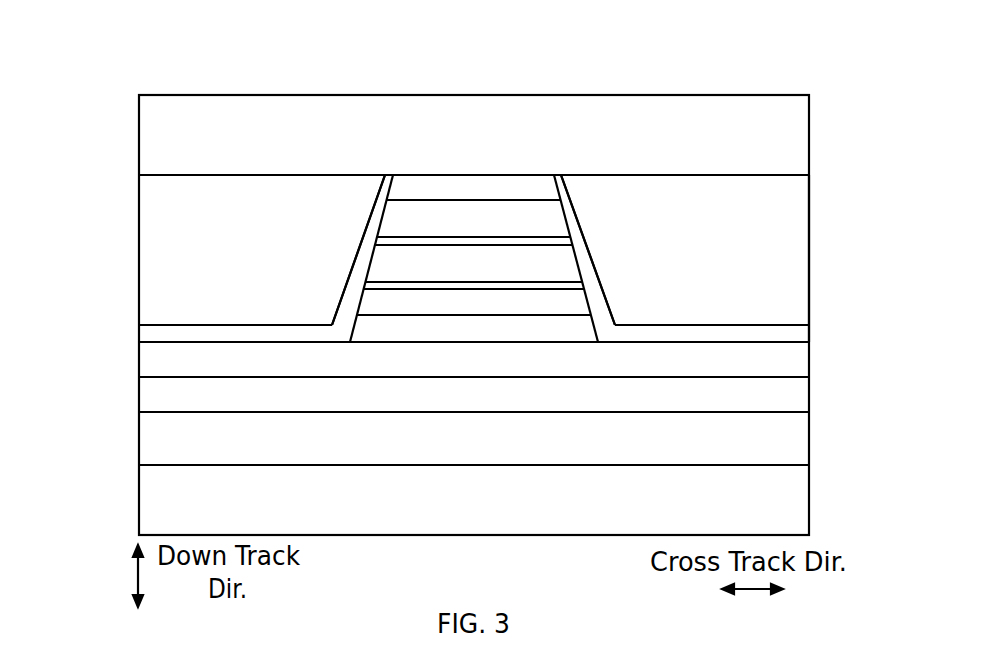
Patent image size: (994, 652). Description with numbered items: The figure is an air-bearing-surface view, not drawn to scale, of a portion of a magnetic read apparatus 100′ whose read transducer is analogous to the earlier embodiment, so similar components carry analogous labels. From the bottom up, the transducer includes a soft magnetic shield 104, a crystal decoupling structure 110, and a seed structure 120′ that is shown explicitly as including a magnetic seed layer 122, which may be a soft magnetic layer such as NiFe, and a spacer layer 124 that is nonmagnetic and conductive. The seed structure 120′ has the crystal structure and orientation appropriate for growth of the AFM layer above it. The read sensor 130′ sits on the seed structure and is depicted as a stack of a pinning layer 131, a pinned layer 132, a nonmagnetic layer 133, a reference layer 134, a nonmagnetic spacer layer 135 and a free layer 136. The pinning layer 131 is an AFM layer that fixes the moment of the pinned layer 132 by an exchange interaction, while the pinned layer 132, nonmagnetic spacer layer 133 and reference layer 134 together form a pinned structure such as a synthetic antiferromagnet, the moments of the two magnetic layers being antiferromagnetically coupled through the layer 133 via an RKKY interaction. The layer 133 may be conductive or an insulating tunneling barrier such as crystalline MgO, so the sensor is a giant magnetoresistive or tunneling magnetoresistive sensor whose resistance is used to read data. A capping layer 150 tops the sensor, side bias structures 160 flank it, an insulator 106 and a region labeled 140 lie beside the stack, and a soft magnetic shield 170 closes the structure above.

The magnetic read apparatus 100′ is at (530, 55).
The soft magnetic shield 104 is at (474, 502).
The insulator 106 is at (139, 325).
The crystal decoupling structure 110 is at (474, 444).
The seed structure 120′ is at (840, 382).
The magnetic seed layer 122 is at (474, 395).
The spacer layer 124 is at (474, 360).
The read sensor 130′ is at (303, 289).
The pinning layer 131 is at (474, 328).
The pinned layer 132 is at (474, 303).
The nonmagnetic spacer layer 133 is at (583, 285).
The reference layer 134 is at (473, 266).
The nonmagnetic spacer layer 135 is at (380, 237).
The free layer 136 is at (473, 220).
The insulating layer 140 is at (810, 249).
The capping layer 150 is at (474, 188).
The side bias structures 160 is at (474, 250).
The soft magnetic shield 170 is at (474, 139).